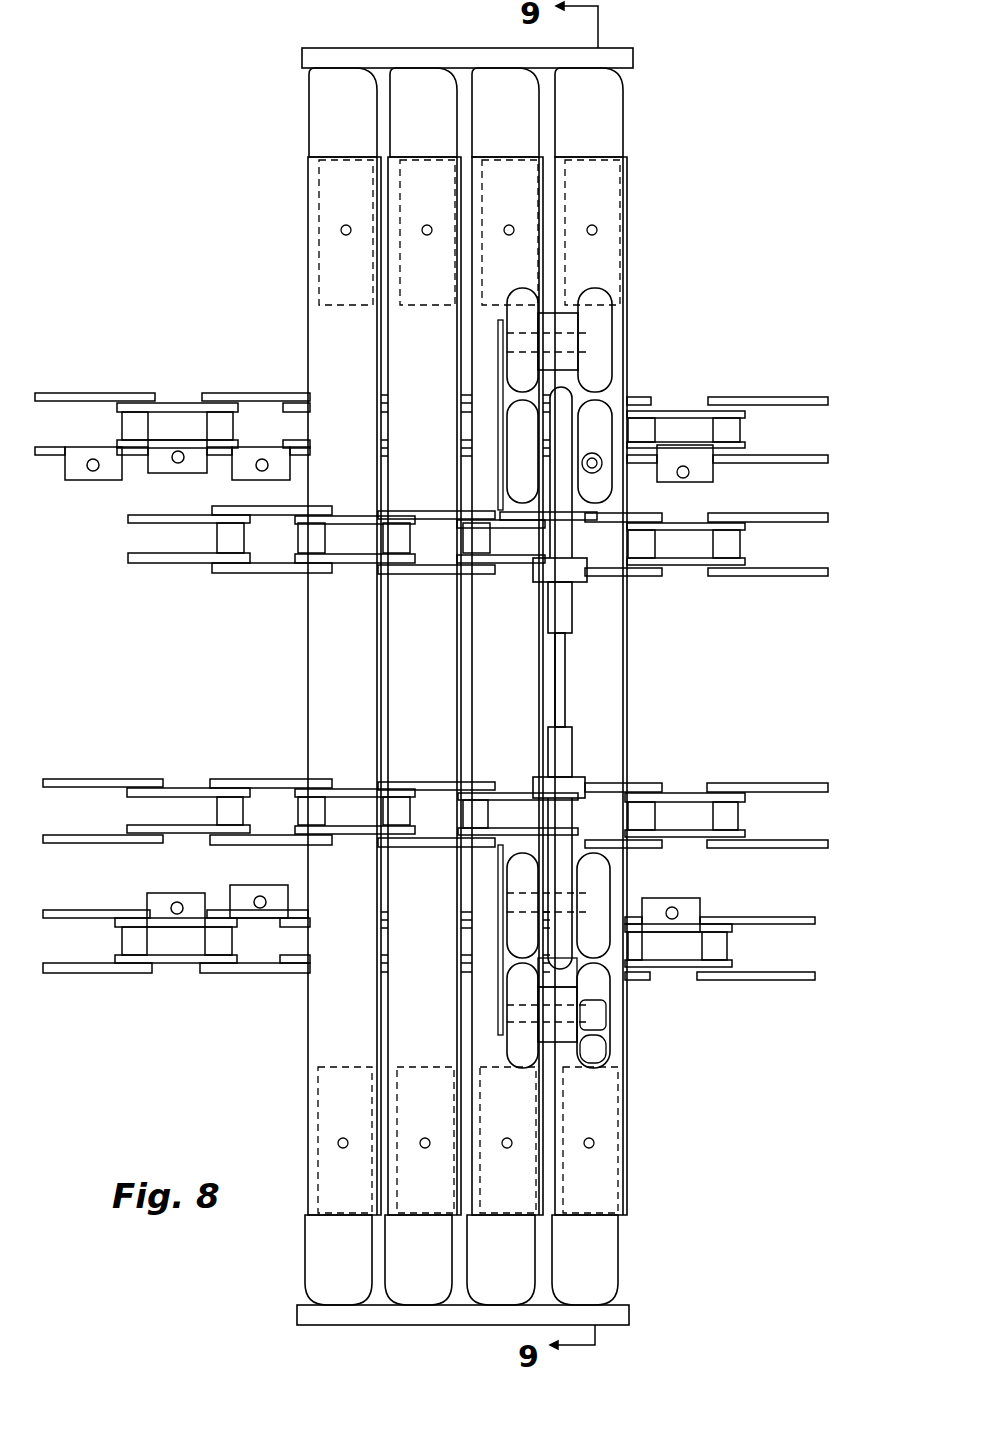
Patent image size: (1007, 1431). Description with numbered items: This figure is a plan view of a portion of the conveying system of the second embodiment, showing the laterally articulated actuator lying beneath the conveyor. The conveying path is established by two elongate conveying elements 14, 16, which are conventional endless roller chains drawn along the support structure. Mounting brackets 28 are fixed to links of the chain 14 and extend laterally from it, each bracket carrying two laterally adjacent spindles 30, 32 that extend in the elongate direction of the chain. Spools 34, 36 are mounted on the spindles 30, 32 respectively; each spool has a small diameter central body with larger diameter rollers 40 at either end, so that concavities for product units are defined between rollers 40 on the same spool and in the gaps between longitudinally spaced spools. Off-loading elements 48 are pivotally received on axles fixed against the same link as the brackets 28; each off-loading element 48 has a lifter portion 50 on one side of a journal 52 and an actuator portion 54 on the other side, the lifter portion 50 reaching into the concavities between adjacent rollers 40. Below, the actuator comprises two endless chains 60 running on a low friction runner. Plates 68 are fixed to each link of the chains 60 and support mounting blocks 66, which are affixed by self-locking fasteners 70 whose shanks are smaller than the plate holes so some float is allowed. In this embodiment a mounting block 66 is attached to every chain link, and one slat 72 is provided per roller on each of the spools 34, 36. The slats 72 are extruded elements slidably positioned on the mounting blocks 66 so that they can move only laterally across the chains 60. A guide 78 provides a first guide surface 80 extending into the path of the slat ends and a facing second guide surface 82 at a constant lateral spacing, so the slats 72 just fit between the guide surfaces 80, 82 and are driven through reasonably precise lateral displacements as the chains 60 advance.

The elongate conveying element 14 is at (788, 783).
The elongate conveying element 16 is at (792, 576).
The mounting bracket 28 is at (498, 380).
The spindle 30 is at (585, 912).
The spindle 32 is at (583, 1020).
The spool 34 is at (610, 905).
The spool 36 is at (608, 1048).
The roller 40 is at (612, 487).
The off-loading element 48 is at (580, 975).
The lifter portion 50 is at (562, 955).
The journal 52 is at (585, 777).
The actuator portion 54 is at (565, 740).
The endless chain 60 is at (774, 397).
The mounting block 66 is at (605, 637).
The plate 68 is at (700, 470).
The fastener 70 is at (594, 452).
The slat 72 is at (625, 302).
The guide 78 is at (622, 48).
The guide surface 80 is at (623, 1305).
The second guide surface 82 is at (633, 72).